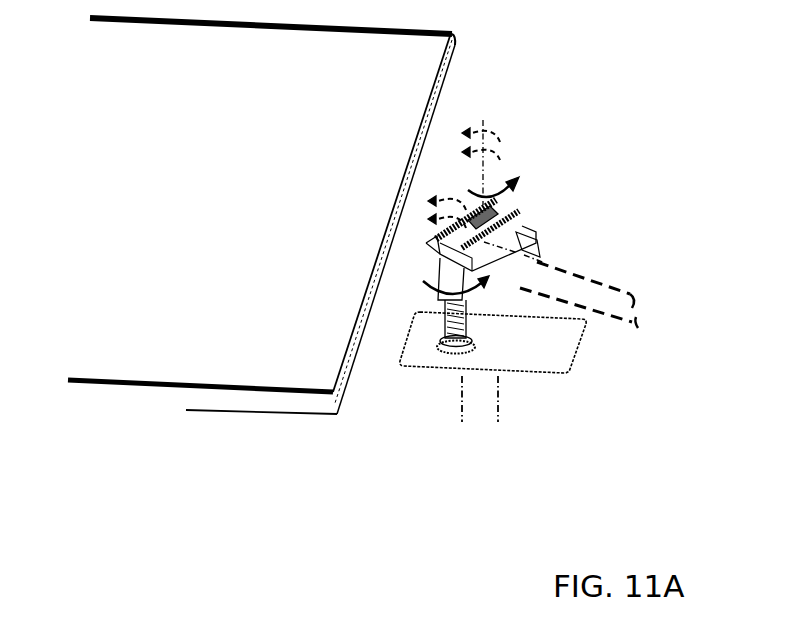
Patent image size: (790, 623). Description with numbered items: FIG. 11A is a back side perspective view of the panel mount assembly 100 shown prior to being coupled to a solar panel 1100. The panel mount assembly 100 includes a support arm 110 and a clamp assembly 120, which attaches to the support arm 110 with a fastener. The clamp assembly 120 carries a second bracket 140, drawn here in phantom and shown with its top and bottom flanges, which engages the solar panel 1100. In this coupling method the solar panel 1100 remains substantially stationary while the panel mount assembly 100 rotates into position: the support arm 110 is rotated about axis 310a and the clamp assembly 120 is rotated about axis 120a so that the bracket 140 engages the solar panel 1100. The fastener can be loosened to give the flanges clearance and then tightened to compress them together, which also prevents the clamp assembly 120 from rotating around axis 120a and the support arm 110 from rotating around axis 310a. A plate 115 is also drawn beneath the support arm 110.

The solar panel 1100 is at (239, 406).
The panel mount assembly 100 is at (565, 153).
The support arm 110 is at (448, 275).
The base plate 115 is at (510, 344).
The clamp assembly 120 is at (545, 200).
The axis 120a is at (489, 128).
The axis 310a is at (454, 196).
The second bracket 140 is at (609, 295).